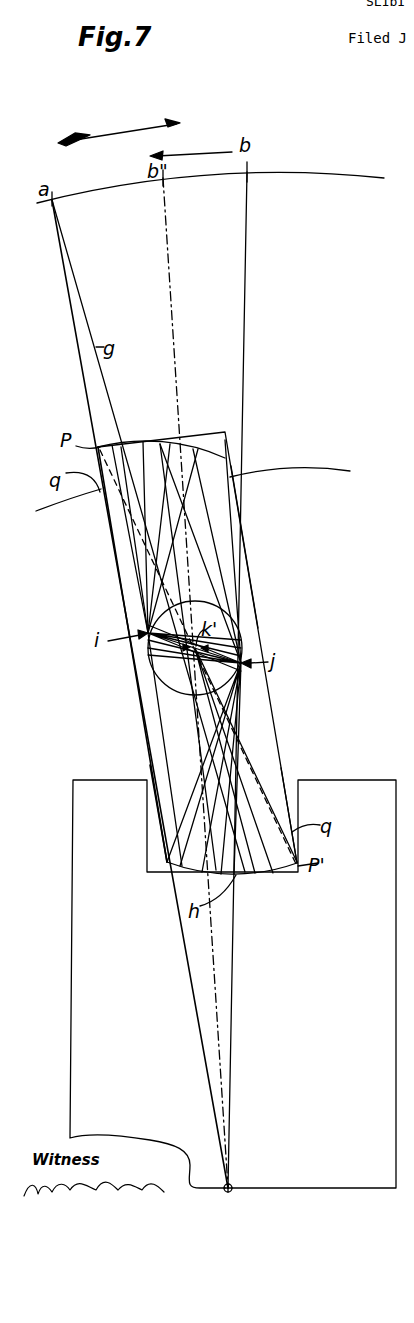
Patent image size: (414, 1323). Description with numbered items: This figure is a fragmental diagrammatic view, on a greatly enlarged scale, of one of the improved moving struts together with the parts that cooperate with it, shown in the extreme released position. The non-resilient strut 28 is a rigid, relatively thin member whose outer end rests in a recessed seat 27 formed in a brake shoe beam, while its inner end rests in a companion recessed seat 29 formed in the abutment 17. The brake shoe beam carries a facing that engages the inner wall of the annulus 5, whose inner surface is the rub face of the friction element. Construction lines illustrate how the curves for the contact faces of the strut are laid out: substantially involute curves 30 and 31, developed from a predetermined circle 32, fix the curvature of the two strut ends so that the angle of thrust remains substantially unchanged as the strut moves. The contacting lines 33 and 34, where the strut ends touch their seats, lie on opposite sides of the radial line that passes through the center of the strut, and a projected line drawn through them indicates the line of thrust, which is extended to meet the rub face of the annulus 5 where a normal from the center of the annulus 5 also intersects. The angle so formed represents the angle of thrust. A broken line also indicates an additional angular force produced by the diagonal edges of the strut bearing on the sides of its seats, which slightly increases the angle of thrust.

The annulus 5 is at (294, 178).
The abutment 17 is at (233, 984).
The recessed seat 27 is at (197, 443).
The non-resilient strut 28 is at (227, 518).
The companion recessed seat 29 is at (166, 862).
The involute curve 30 is at (280, 866).
The involute curve 31 is at (160, 443).
The predetermined circle 32 is at (213, 602).
The contacting line 33 is at (120, 443).
The contacting line 34 is at (240, 875).